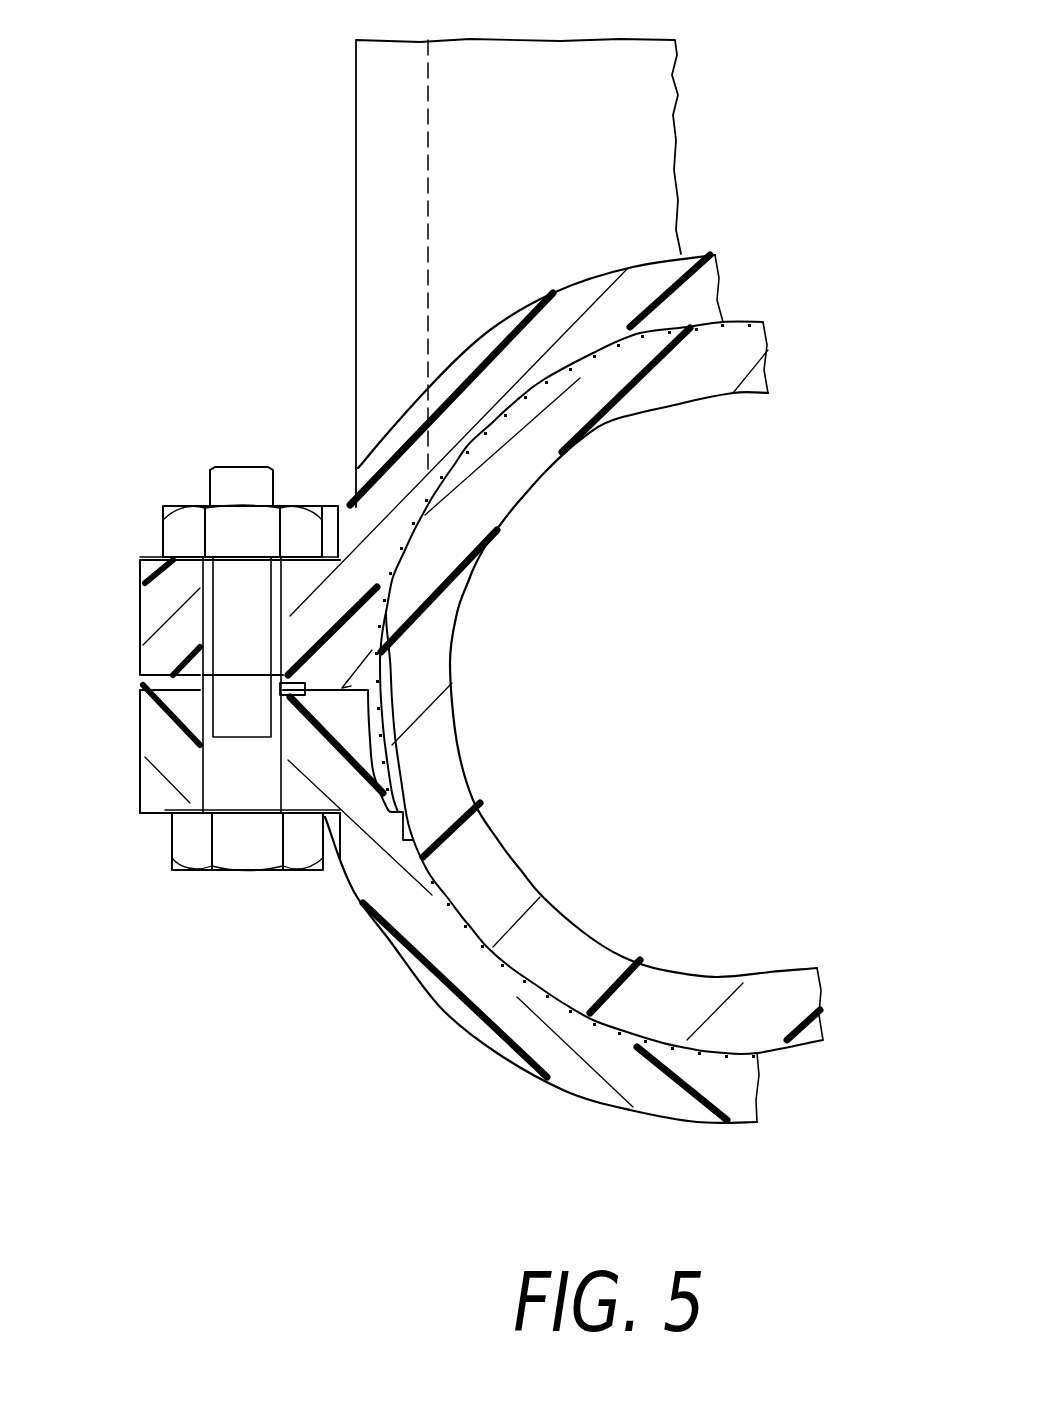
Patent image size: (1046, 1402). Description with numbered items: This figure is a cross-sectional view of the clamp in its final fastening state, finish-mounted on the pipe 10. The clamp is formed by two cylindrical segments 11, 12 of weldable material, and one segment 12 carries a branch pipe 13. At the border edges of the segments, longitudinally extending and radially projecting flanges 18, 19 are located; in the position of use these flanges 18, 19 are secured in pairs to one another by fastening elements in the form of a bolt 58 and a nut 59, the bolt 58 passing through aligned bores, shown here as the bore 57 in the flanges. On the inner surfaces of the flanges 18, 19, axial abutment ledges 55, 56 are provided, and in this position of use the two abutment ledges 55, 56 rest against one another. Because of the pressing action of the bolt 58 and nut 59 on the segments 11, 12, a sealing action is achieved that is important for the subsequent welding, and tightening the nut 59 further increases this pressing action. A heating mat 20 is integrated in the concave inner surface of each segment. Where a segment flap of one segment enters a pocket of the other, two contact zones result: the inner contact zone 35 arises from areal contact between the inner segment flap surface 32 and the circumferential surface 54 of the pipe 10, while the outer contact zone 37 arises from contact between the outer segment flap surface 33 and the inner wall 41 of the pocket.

The pipe 10 is at (747, 1020).
The cylindrical segment 11 is at (744, 1138).
The cylindrical segment 12 is at (715, 245).
The branch pipe 13 is at (385, 128).
The flange 18 is at (165, 752).
The flange 19 is at (165, 655).
The heating mat 20 is at (574, 344).
The inner segment flap surface 32 is at (406, 772).
The outer segment flap surface 33 is at (370, 790).
The inner contact zone 35 is at (540, 677).
The outer contact zone 37 is at (263, 990).
The inner wall of pocket 41 is at (398, 832).
The circumferential surface of pipe 54 is at (420, 829).
The abutment ledge 55 is at (287, 697).
The abutment ledge 56 is at (365, 590).
The bore 57 is at (200, 598).
The bolt 58 is at (240, 873).
The nut 59 is at (190, 525).